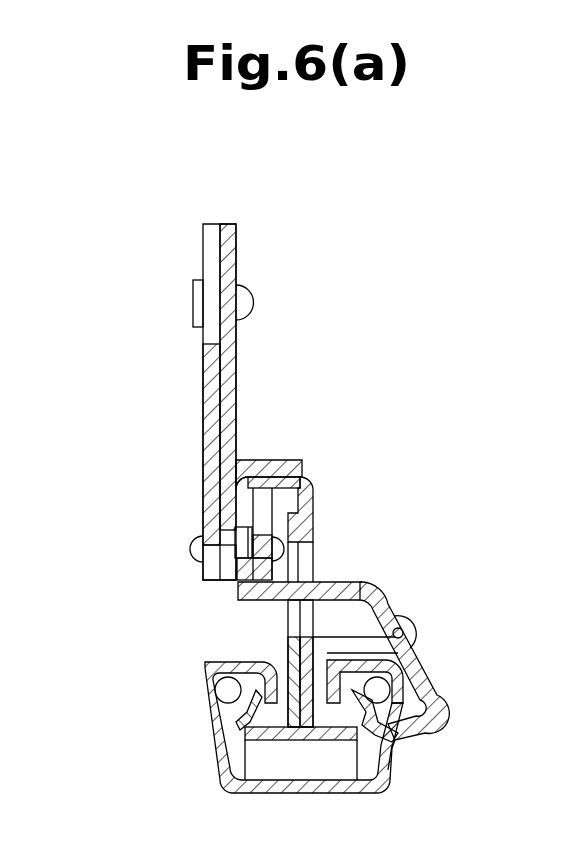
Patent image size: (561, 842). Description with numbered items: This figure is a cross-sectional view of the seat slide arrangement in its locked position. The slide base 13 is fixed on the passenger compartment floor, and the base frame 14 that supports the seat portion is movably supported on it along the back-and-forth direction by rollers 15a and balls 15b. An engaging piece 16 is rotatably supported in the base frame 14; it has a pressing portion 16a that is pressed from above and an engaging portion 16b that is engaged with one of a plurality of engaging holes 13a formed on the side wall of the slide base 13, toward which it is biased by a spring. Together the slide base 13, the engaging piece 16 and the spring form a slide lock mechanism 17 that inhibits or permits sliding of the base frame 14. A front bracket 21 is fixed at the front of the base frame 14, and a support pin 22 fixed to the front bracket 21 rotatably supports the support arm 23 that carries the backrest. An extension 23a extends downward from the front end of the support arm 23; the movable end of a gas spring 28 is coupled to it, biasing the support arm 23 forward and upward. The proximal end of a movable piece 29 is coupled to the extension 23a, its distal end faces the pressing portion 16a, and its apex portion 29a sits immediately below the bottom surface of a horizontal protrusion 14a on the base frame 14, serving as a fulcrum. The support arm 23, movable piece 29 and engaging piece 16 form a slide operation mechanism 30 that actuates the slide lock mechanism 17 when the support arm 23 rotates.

The front bracket 21 is at (237, 248).
The support pin 22 is at (193, 300).
The support arm 23 is at (203, 382).
The extension 23a is at (203, 576).
The protrusion 14a is at (270, 470).
The apex portion 29a is at (265, 502).
The movable piece 29 is at (272, 508).
The gas spring 28 is at (263, 534).
The base frame 14 is at (315, 505).
The pressing portion 16a is at (257, 603).
The engaging piece 16 is at (388, 612).
The slide lock mechanism 17 is at (461, 649).
The slide base 13 is at (207, 731).
The engaging hole 13a is at (392, 765).
The engaging portion 16b is at (395, 740).
The balls 15b is at (225, 688).
The rollers 15a is at (298, 770).
The slide operation mechanism 30 is at (106, 552).